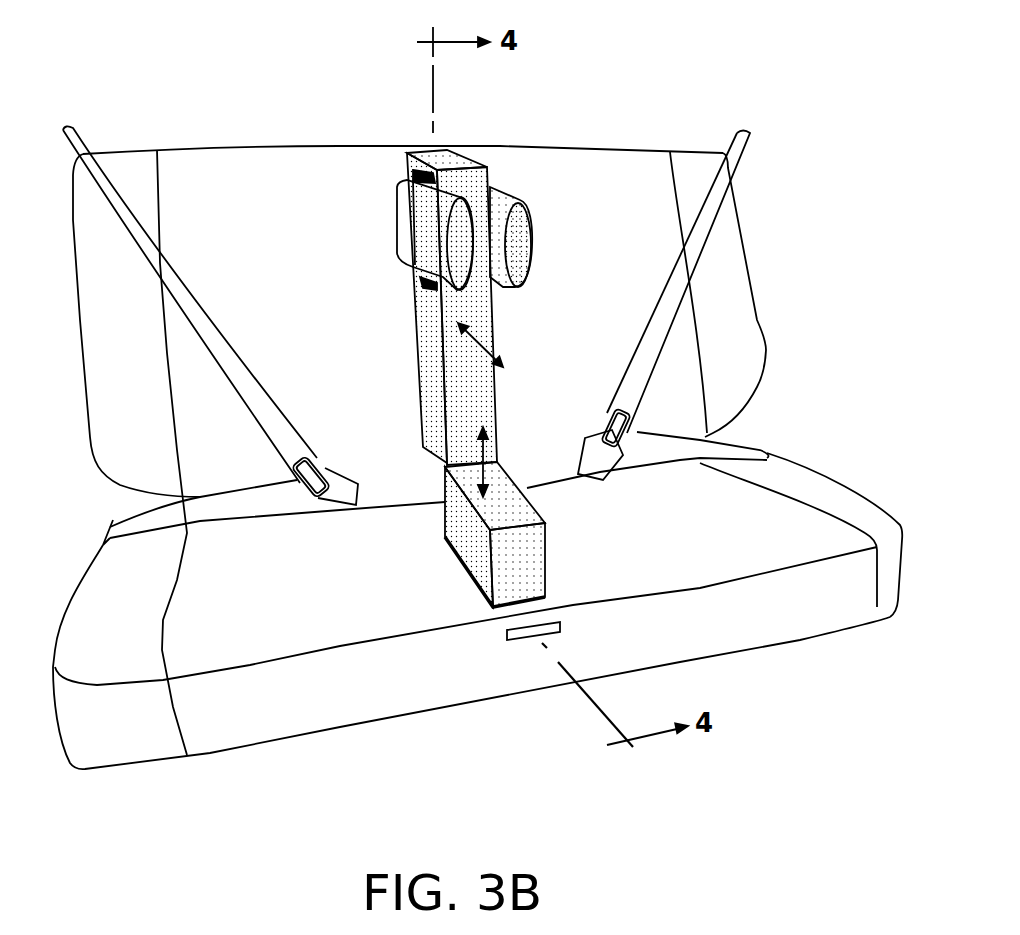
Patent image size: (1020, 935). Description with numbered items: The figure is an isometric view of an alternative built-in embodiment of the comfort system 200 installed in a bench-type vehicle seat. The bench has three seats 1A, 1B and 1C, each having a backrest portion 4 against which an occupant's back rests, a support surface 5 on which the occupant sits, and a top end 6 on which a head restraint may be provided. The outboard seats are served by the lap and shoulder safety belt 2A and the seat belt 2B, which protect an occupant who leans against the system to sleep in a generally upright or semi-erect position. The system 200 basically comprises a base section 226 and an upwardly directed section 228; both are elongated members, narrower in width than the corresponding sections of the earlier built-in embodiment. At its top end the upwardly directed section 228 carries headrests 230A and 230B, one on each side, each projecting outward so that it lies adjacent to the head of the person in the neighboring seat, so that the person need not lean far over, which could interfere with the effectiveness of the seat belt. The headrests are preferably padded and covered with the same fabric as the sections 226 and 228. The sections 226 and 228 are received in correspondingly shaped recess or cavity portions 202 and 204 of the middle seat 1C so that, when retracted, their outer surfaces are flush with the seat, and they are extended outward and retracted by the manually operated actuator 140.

The seat 1A is at (203, 175).
The seat 1B is at (630, 215).
The middle seat 1C is at (470, 647).
The lap and shoulder safety belt 2A is at (203, 347).
The seat belt 2B is at (713, 247).
The backrest portion 4 is at (250, 195).
The support surface 5 is at (720, 558).
The top end 6 is at (570, 148).
The manually operated actuator 140 is at (522, 643).
The comfort system 200 is at (510, 133).
The recess portion 202 is at (440, 567).
The recess portion 204 is at (413, 340).
The base section 226 is at (527, 563).
The upwardly directed section 228 is at (473, 395).
The headrest 230A is at (417, 230).
The headrest 230B is at (527, 220).